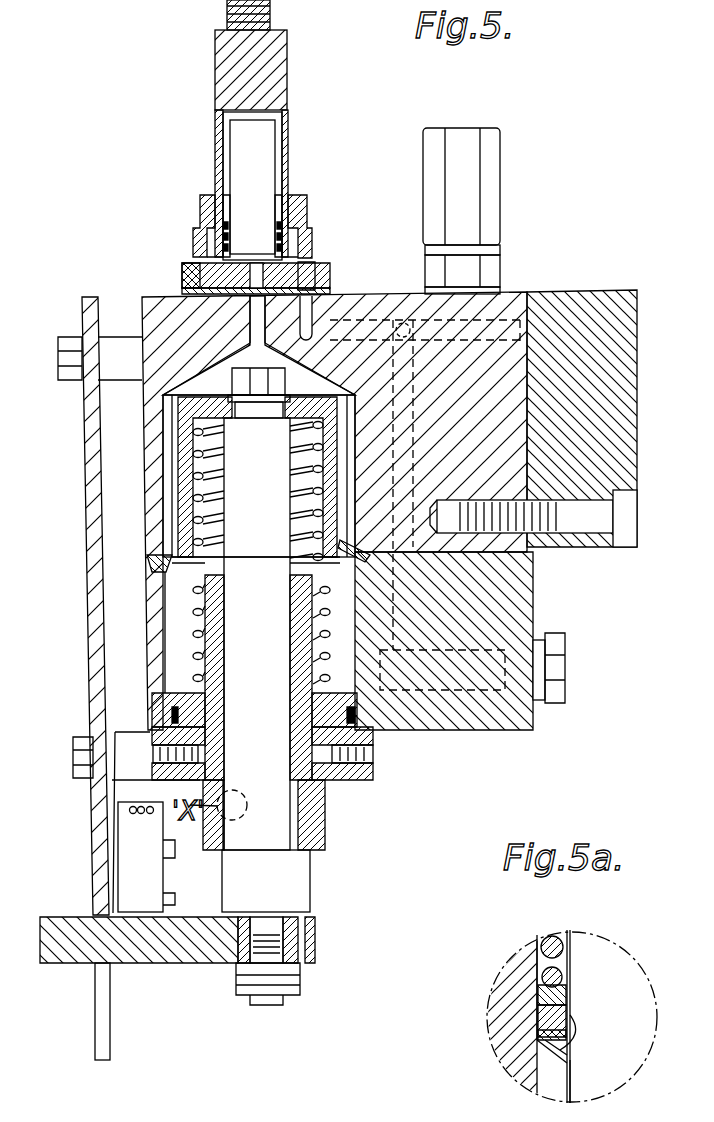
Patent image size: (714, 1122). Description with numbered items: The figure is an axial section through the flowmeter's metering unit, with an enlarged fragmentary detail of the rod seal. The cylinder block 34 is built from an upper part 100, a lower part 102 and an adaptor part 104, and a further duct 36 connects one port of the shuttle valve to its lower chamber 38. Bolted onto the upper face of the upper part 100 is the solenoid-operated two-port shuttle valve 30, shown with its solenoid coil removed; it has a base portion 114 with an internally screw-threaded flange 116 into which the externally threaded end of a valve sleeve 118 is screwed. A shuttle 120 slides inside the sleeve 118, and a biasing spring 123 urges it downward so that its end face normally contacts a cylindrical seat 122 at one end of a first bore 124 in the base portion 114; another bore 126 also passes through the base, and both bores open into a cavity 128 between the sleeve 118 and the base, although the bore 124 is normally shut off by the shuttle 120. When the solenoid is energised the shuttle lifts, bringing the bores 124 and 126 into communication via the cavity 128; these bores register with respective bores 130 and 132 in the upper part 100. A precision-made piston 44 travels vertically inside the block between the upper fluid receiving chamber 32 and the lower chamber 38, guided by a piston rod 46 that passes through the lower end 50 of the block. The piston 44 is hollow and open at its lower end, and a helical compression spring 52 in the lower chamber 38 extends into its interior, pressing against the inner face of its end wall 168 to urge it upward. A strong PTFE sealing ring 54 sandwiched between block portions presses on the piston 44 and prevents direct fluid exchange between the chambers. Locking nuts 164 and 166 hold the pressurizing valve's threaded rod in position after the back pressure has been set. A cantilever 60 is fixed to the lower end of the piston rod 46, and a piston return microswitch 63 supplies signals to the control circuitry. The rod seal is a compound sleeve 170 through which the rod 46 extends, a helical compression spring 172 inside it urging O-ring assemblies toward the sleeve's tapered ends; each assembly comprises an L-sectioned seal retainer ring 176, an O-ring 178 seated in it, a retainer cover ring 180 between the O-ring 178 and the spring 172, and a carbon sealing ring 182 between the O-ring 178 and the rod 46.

In FIG. 5, the valve sleeve 118 is at (275, 96).
In FIG. 5, the shuttle 120 is at (262, 150).
In FIG. 5, the biasing spring 123 is at (284, 236).
In FIG. 5, the internally screw-threaded flange 116 is at (308, 236).
In FIG. 5, the cavity 128 is at (310, 262).
In FIG. 5, the bore 126 is at (318, 280).
In FIG. 5, the cylindrical seat 122 is at (226, 222).
In FIG. 5, the solenoid-operated two-port shuttle valve 30 is at (254, 268).
In FIG. 5, the first bore 124 is at (200, 262).
In FIG. 5, the base portion 114 is at (182, 273).
In FIG. 5, the bore 130 is at (142, 318).
In FIG. 5, the upper part 100 is at (505, 300).
In FIG. 5, the adaptor part 104 is at (613, 347).
In FIG. 5, the further duct 36 is at (470, 557).
In FIG. 5, the cylinder block 34 is at (500, 620).
In FIG. 5, the lower part 102 is at (520, 628).
In FIG. 5, the locking nut 166 is at (490, 178).
In FIG. 5, the locking nut 164 is at (490, 268).
In FIG. 5, the upper fluid receiving chamber 32 is at (240, 352).
In FIG. 5, the bore 132 is at (165, 394).
In FIG. 5, the piston 44 is at (180, 482).
In FIG. 5, the end wall 168 is at (188, 455).
In FIG. 5, the piston rod 46 is at (293, 879).
In FIG. 5A, the piston rod 46 is at (605, 1075).
In FIG. 5, the PTFE sealing ring 54 is at (147, 563).
In FIG. 5, the lower chamber 38 is at (178, 648).
In FIG. 5, the helical compression spring 52 is at (196, 591).
In FIG. 5, the lower end 50 is at (375, 755).
In FIG. 5, the piston return microswitch 63 is at (135, 882).
In FIG. 5, the cantilever 60 is at (200, 950).
In FIG. 5A, the helical compression spring 172 is at (540, 945).
In FIG. 5A, the retainer cover ring 180 is at (565, 990).
In FIG. 5A, the compound sleeve 170 is at (507, 1020).
In FIG. 5A, the O-ring 178 is at (540, 1032).
In FIG. 5A, the L-sectioned seal retainer ring 176 is at (545, 1040).
In FIG. 5A, the carbon sealing ring 182 is at (555, 1055).